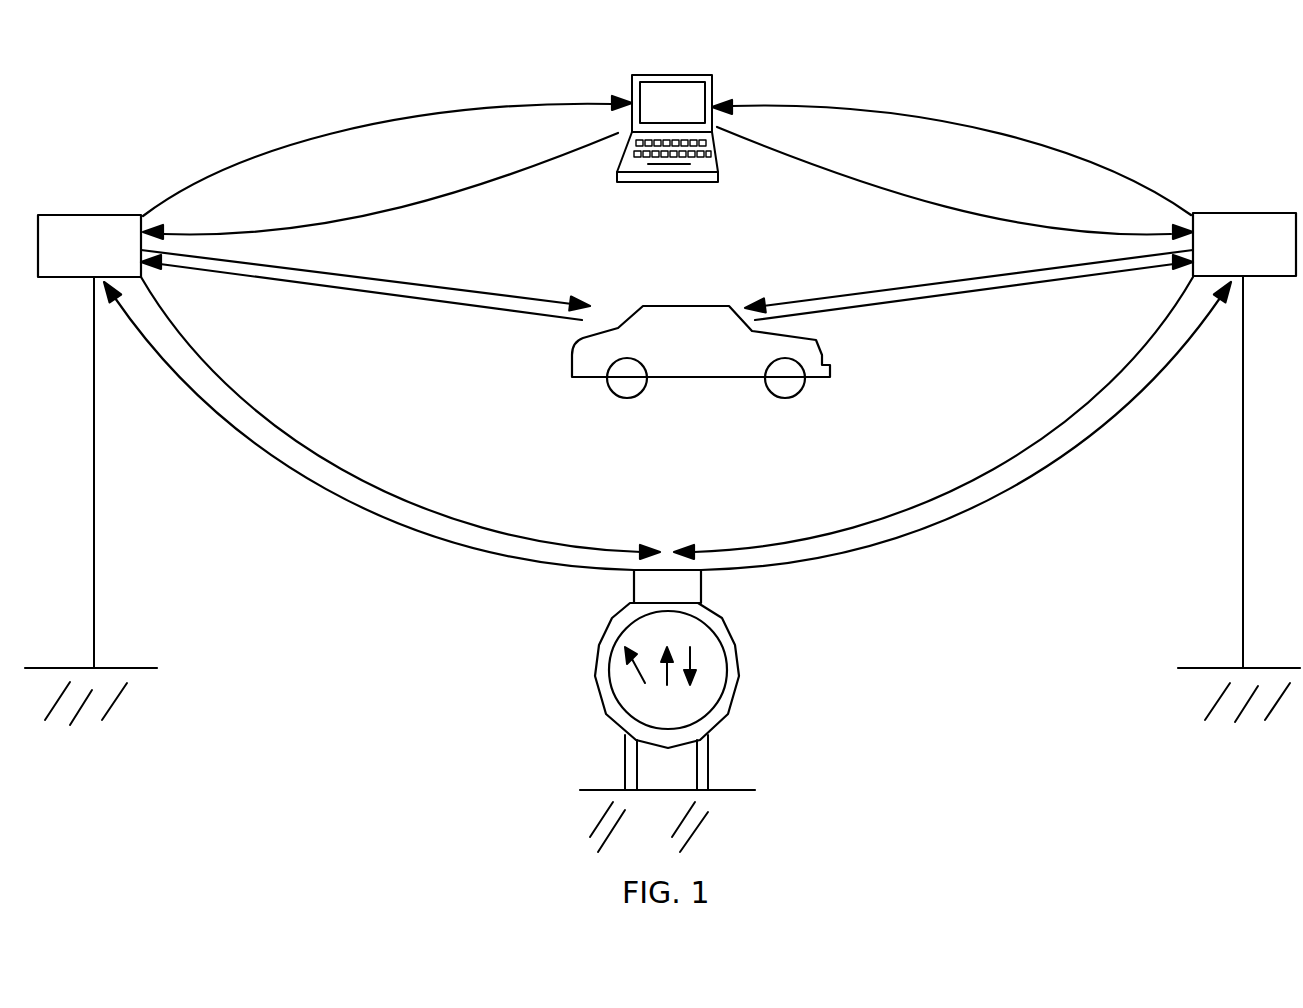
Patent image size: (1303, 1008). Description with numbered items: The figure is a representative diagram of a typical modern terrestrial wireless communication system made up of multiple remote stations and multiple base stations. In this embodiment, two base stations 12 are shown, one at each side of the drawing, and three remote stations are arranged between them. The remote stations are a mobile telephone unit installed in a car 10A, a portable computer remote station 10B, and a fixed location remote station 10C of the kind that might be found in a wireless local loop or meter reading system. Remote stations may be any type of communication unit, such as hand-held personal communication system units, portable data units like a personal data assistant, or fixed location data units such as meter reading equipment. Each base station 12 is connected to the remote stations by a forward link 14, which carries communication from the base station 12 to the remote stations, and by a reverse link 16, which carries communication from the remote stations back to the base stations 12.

The base station 12 is at (98, 214).
The forward link 14 is at (363, 125).
The reverse link 16 is at (511, 183).
The mobile telephone unit installed in a car 10A is at (678, 306).
The portable computer remote station 10B is at (680, 75).
The fixed location remote station 10C is at (667, 570).